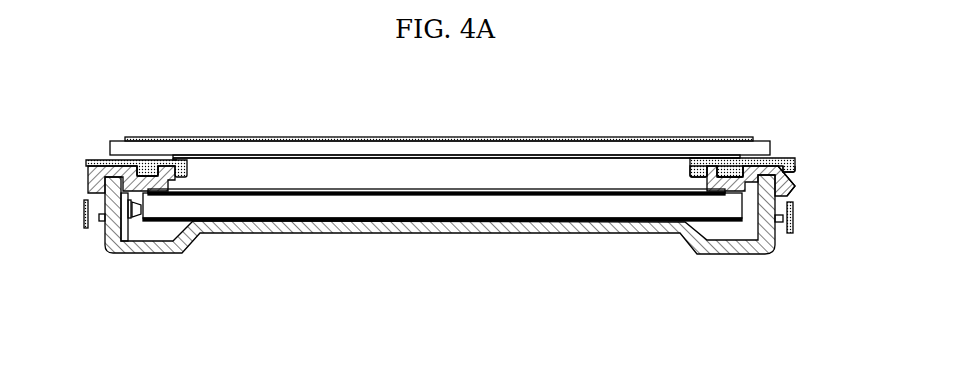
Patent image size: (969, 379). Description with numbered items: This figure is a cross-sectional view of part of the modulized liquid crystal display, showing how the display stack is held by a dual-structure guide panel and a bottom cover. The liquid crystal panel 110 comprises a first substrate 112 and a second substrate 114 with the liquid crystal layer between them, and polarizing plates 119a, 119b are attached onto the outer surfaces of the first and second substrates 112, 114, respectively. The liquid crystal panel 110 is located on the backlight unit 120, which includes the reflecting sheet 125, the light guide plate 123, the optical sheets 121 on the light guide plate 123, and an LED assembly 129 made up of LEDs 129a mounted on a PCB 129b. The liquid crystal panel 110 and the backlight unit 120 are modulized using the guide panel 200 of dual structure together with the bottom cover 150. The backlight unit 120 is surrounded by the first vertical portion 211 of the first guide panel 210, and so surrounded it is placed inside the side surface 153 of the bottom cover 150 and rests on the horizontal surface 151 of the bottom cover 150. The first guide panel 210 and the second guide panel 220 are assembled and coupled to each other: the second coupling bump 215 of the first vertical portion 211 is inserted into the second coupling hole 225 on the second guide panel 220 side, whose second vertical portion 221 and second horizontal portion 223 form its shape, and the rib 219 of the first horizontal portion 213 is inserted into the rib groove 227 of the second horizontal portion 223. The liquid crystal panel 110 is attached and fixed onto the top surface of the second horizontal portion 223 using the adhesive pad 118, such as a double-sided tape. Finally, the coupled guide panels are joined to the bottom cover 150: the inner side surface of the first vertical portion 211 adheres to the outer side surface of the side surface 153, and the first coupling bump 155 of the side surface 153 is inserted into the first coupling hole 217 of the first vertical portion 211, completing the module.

The liquid crystal panel 110 is at (440, 114).
The first substrate 112 is at (248, 157).
The second substrate 114 is at (218, 138).
The adhesive pad 118 is at (154, 157).
The polarizing plate 119a is at (324, 156).
The polarizing plate 119b is at (294, 142).
The backlight unit 120 is at (431, 264).
The optical sheets 121 is at (257, 200).
The light guide plate 123 is at (222, 207).
The reflecting sheet 125 is at (312, 230).
The LED assembly 129 is at (159, 259).
The LEDs 129a is at (163, 249).
The PCB 129b is at (127, 241).
The bottom cover 150 is at (88, 254).
The horizontal surface 151 is at (104, 222).
The side surface 153 is at (86, 229).
The first coupling bump 155 is at (787, 214).
The guide panel 200 is at (481, 180).
The first guide panel 210 is at (481, 210).
The first vertical portion 211 is at (796, 195).
The first horizontal portion 213 is at (795, 178).
The second coupling bump 215 is at (86, 190).
The first coupling hole 217 is at (795, 227).
The rib 219 is at (690, 163).
The second guide panel 220 is at (756, 142).
The second vertical portion 221 is at (795, 163).
The second horizontal portion 223 is at (757, 158).
The second coupling hole 225 is at (84, 177).
The rib groove 227 is at (720, 166).